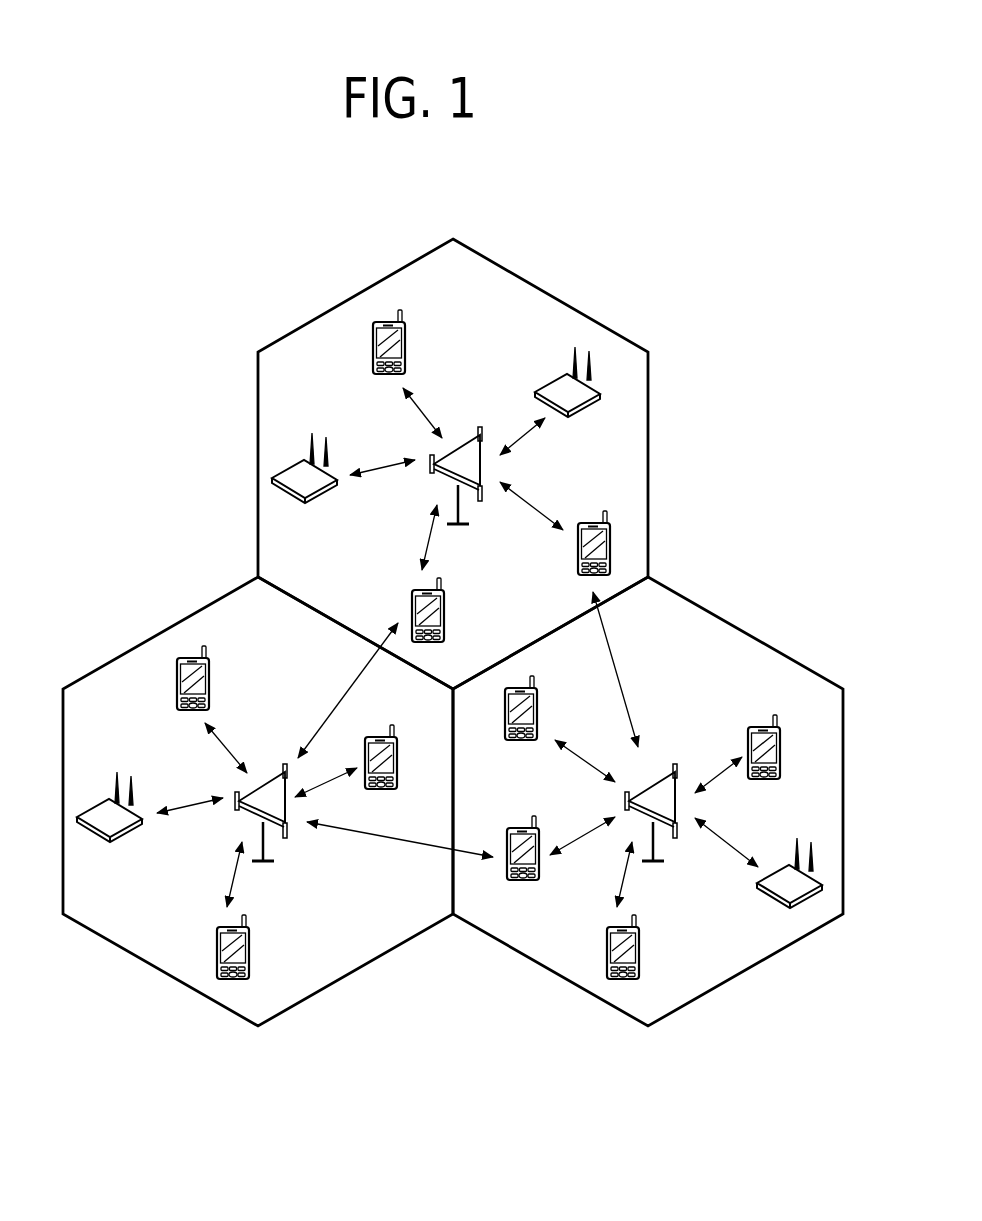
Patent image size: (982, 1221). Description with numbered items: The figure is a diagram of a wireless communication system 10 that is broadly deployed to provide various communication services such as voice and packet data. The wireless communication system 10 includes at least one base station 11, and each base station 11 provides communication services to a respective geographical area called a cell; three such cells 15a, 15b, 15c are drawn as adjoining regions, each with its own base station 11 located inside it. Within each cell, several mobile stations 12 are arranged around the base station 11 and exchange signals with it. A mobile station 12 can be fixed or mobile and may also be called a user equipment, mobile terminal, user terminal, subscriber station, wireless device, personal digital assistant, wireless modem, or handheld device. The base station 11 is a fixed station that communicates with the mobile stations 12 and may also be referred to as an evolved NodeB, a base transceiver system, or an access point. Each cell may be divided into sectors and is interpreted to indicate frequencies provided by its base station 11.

The wireless communication system 10 is at (731, 357).
The base station 11 is at (475, 438).
The mobile station 12 is at (405, 343).
The cell 15a is at (648, 452).
The cell 15b is at (773, 649).
The cell 15c is at (138, 647).